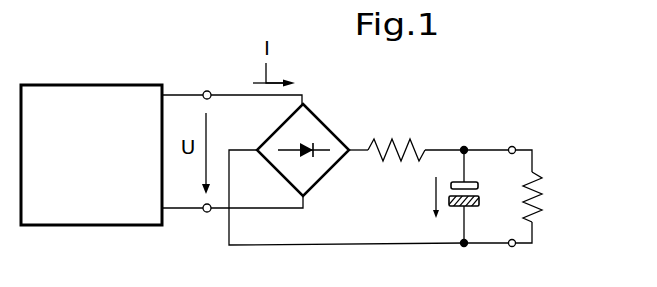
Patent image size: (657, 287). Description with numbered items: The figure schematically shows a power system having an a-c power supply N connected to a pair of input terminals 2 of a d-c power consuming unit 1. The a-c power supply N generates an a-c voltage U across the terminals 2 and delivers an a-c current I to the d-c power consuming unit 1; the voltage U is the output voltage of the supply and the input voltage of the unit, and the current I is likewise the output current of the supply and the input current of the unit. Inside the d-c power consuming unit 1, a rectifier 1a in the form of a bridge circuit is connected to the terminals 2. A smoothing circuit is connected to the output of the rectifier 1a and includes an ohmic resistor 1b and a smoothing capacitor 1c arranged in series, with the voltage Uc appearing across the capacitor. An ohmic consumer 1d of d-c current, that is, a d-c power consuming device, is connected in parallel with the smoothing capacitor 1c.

The a-c power supply N is at (92, 83).
The input terminals 2 is at (206, 91).
The d-c power consuming unit 1 is at (415, 150).
The rectifier 1a is at (322, 123).
The ohmic resistor 1b is at (391, 139).
The smoothing capacitor 1c is at (475, 197).
The ohmic consumer 1d is at (537, 192).